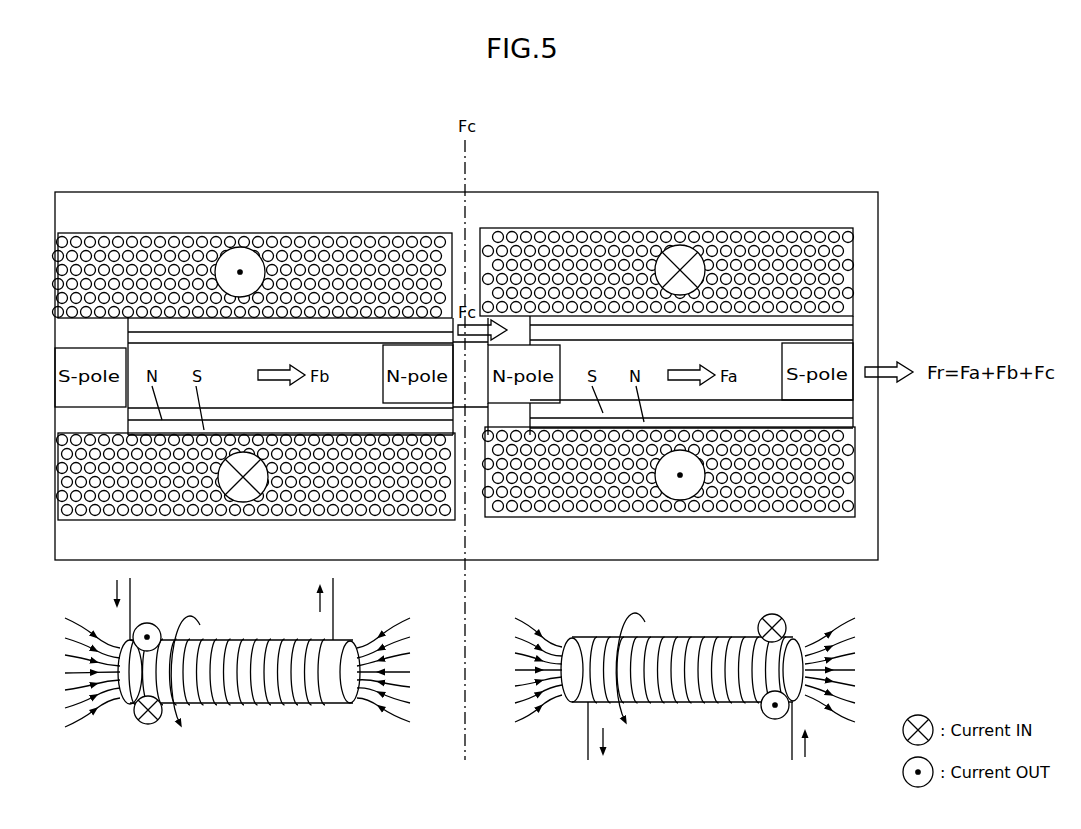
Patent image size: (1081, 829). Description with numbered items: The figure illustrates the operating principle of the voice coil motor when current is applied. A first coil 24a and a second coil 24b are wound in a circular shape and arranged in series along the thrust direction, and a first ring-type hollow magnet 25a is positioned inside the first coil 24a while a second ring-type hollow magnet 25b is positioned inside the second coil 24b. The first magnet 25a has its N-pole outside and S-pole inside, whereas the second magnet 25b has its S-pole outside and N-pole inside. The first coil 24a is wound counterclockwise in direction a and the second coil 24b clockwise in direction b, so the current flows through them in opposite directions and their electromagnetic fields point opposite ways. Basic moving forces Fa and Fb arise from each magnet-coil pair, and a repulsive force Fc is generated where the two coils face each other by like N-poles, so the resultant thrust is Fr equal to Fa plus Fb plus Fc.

The first coil 24a is at (696, 457).
The second coil 24b is at (241, 459).
The first ring-type hollow magnet 25a is at (620, 310).
The second ring-type hollow magnet 25b is at (172, 312).